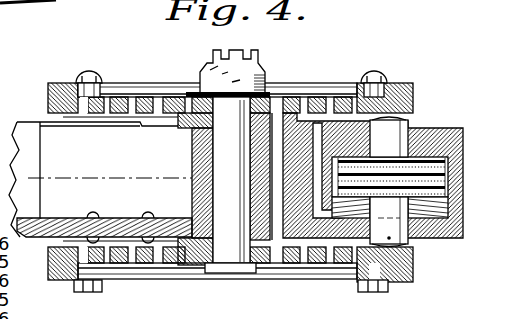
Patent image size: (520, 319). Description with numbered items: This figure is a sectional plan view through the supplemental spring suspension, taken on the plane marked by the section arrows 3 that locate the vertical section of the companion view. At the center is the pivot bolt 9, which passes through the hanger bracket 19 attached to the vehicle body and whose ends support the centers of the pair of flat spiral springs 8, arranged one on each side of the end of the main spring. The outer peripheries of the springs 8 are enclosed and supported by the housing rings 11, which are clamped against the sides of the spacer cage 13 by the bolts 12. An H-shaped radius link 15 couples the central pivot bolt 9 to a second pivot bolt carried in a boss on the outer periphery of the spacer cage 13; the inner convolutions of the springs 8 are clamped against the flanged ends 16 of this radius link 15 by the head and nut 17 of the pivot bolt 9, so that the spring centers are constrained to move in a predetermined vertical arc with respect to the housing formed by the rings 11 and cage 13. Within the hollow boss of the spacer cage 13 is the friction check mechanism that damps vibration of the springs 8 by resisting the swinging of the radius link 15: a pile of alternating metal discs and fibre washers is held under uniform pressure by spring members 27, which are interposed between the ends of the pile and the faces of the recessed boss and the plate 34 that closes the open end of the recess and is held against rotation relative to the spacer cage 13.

The section plane 3— 3 is at (40, 178).
The flat spiral springs 8 is at (145, 98).
The pivot bolt 9 is at (235, 273).
The housing rings 11 is at (394, 83).
The bolts 12 is at (92, 71).
The spacer cage 13 is at (444, 143).
The radius link 15 is at (268, 205).
The flanged ends 16 is at (186, 126).
The head and nut 17 is at (205, 75).
The hanger bracket 19 is at (192, 168).
The spring members 27 is at (378, 165).
The plate 34 is at (432, 210).